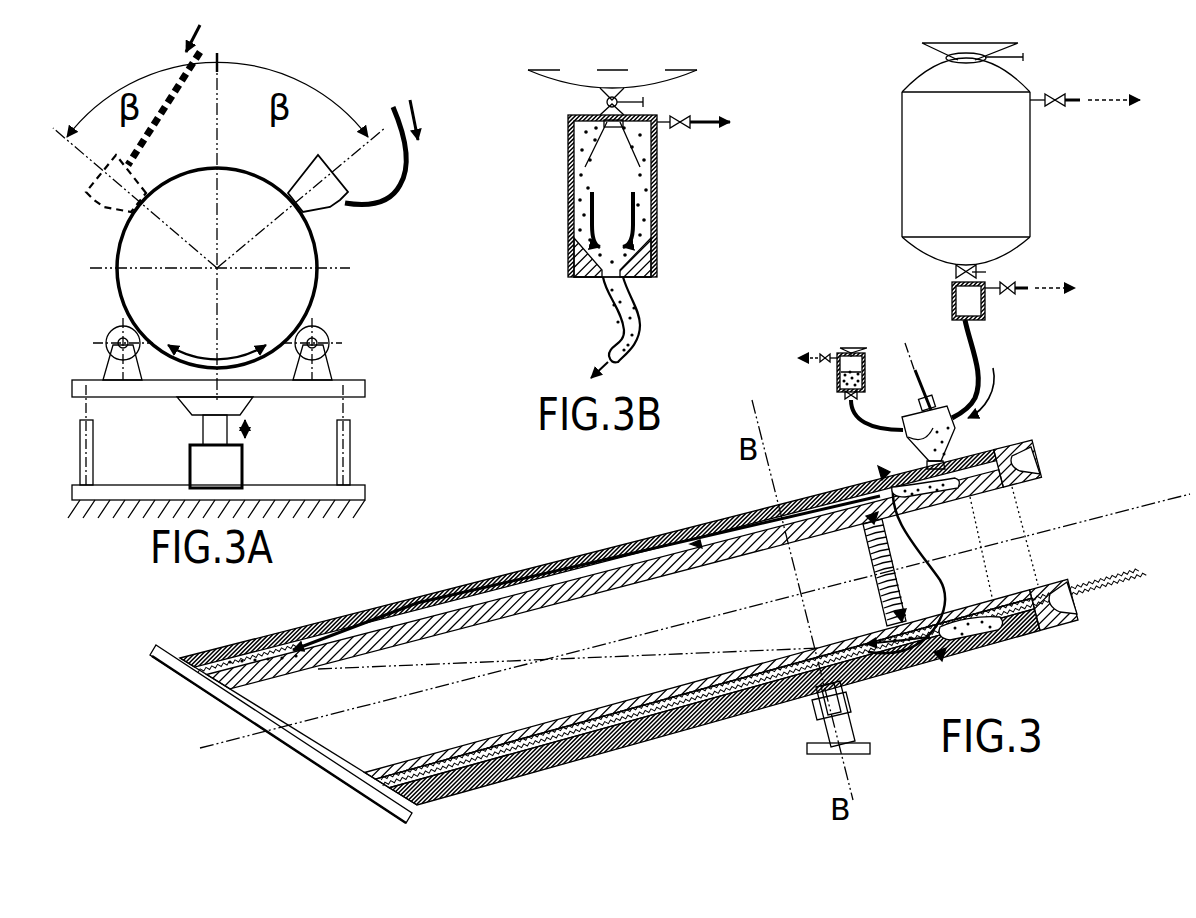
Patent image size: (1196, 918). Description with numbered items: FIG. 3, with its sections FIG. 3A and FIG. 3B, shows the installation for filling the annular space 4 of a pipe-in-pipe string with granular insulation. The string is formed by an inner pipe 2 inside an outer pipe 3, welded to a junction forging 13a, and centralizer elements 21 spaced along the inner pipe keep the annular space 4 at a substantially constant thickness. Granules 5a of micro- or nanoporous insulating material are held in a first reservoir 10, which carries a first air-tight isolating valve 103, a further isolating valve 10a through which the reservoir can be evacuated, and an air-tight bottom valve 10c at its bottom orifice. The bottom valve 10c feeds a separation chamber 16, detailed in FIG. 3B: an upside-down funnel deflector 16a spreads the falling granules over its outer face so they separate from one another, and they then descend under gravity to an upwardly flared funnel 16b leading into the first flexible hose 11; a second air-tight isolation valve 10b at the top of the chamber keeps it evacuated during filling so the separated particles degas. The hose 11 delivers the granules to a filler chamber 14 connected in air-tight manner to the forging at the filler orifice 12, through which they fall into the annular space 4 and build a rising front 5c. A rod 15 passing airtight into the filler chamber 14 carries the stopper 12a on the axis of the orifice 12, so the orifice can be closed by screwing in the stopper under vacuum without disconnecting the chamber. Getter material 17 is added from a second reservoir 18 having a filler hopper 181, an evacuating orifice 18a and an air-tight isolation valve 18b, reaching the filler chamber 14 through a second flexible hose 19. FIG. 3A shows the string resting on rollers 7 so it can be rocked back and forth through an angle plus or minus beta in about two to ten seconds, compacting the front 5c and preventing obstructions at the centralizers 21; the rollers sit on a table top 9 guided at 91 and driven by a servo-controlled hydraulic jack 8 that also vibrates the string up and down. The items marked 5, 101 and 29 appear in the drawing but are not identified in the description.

In FIG. 3, the inner pipe 2 is at (510, 740).
In FIG. 3, the outer pipe 3 is at (490, 778).
In FIG. 3, the annular space 4 is at (548, 579).
In FIG. 3, the inner coating layer 5 is at (555, 742).
In FIG. 3B, the granules 5a is at (648, 218).
In FIG. 3, the granules 5a is at (946, 430).
In FIG. 3, the rising front 5c is at (375, 660).
In FIG. 3A, the rollers 7 is at (112, 330).
In FIG. 3, the rollers 7 is at (842, 706).
In FIG. 3A, the servo-controlled hydraulic jack 8 is at (243, 458).
In FIG. 3A, the table top 9 is at (365, 389).
In FIG. 3, the table top 9 is at (871, 748).
In FIG. 3A, the guide 91 is at (351, 450).
In FIG. 3B, the first reservoir 10 is at (562, 80).
In FIG. 3, the first reservoir 10 is at (1036, 168).
In FIG. 3, the first air-tight isolating valve 10a is at (1055, 94).
In FIG. 3B, the second air-tight isolation valve 10b is at (680, 128).
In FIG. 3, the second air-tight isolation valve 10b is at (1003, 294).
In FIG. 3B, the air-tight bottom valve 10c is at (626, 100).
In FIG. 3, the air-tight bottom valve 10c is at (978, 270).
In FIG. 3, the filling funnel 101 is at (968, 43).
In FIG. 3, the first air-tight isolating valve 103 is at (948, 64).
In FIG. 3A, the first flexible hose 11 is at (157, 137).
In FIG. 3B, the first flexible hose 11 is at (620, 326).
In FIG. 3, the first flexible hose 11 is at (985, 360).
In FIG. 3, the filler orifice 12 is at (935, 502).
In FIG. 3, the stopper 12a is at (924, 462).
In FIG. 3, the second junction forging 13a is at (995, 450).
In FIG. 3A, the filler chamber 14 is at (113, 208).
In FIG. 3, the filler chamber 14 is at (913, 418).
In FIG. 3, the rod 15 is at (924, 389).
In FIG. 3B, the separation chamber 16 is at (566, 204).
In FIG. 3, the separation chamber 16 is at (958, 300).
In FIG. 3B, the deflector 16a is at (586, 157).
In FIG. 3B, the bottom orifice funnel 16b is at (576, 238).
In FIG. 3, the getter material 17 is at (866, 374).
In FIG. 3, the second reservoir 18 is at (838, 382).
In FIG. 3, the evacuating orifice 18a is at (825, 354).
In FIG. 3, the air-tight isolation valve 18b is at (848, 401).
In FIG. 3, the filler hopper 181 is at (851, 347).
In FIG. 3, the second flexible hose 19 is at (863, 430).
In FIG. 3, the centralizer elements 21 is at (682, 544).
In FIG. 3, the coil 29 is at (870, 536).